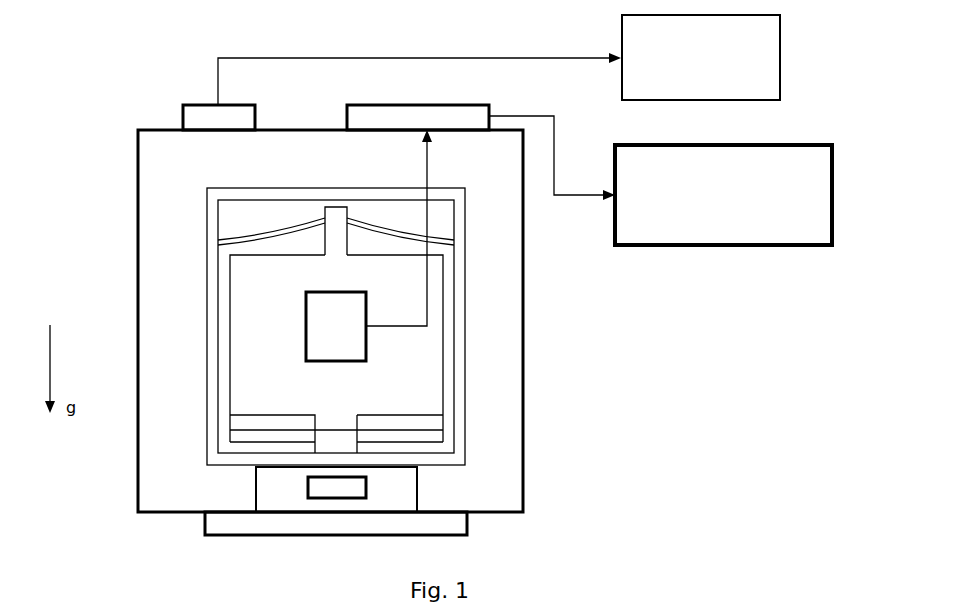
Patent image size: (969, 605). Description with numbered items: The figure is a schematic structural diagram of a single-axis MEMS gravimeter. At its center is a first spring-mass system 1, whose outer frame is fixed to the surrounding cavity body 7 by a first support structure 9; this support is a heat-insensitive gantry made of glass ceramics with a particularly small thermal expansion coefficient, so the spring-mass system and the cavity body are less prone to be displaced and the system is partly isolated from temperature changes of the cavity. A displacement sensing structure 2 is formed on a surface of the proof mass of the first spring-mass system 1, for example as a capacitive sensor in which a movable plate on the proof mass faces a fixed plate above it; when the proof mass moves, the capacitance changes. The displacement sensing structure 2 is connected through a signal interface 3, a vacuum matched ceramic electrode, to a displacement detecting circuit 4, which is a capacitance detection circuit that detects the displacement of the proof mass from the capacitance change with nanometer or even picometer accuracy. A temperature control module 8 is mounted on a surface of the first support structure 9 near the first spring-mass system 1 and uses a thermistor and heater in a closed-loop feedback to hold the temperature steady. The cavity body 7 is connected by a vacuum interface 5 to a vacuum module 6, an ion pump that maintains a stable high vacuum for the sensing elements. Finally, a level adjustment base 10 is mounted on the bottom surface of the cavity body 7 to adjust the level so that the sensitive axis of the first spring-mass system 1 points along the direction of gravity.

The first spring-mass system 1 is at (203, 215).
The displacement sensing structure 2 is at (285, 320).
The signal interface 3 is at (357, 88).
The displacement detecting circuit 4 is at (832, 156).
The vacuum interface 5 is at (178, 100).
The vacuum module 6 is at (781, 60).
The cavity body 7 is at (525, 300).
The temperature control module 8 is at (366, 488).
The first support structure 9 is at (418, 488).
The level adjustment base 10 is at (468, 527).